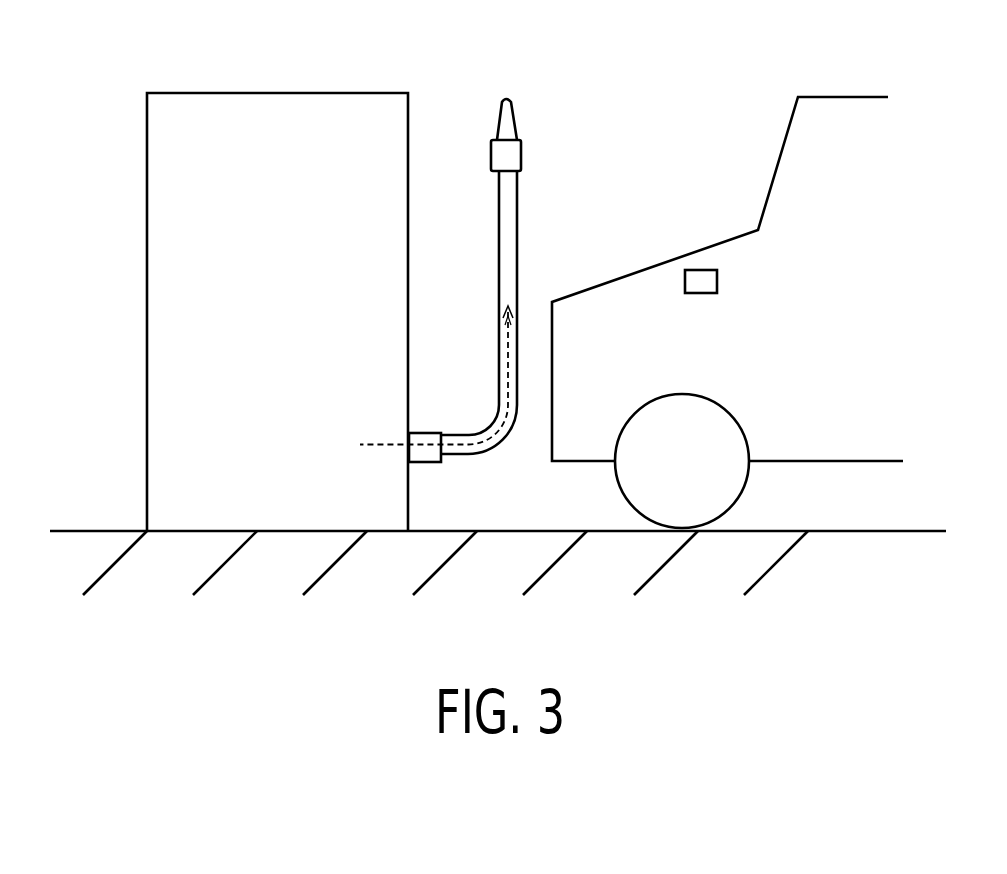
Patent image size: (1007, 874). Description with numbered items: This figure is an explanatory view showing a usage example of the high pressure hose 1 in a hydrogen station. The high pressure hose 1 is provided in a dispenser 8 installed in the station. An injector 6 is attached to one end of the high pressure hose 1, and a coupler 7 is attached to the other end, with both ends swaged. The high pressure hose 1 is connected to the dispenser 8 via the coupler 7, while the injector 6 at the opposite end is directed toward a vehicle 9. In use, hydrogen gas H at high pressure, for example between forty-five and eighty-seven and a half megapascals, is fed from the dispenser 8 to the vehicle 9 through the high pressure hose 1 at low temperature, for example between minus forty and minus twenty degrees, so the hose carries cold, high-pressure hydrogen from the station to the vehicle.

The high pressure hose 1 is at (514, 247).
The injector 6 is at (514, 158).
The coupler 7 is at (423, 442).
The dispenser 8 is at (282, 104).
The vehicle 9 is at (788, 173).